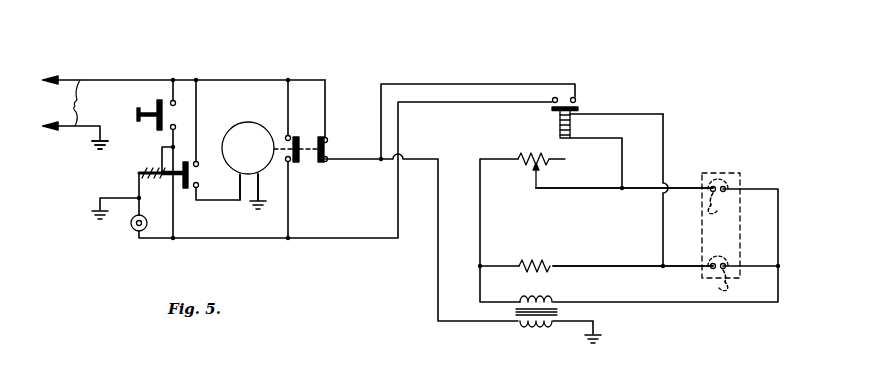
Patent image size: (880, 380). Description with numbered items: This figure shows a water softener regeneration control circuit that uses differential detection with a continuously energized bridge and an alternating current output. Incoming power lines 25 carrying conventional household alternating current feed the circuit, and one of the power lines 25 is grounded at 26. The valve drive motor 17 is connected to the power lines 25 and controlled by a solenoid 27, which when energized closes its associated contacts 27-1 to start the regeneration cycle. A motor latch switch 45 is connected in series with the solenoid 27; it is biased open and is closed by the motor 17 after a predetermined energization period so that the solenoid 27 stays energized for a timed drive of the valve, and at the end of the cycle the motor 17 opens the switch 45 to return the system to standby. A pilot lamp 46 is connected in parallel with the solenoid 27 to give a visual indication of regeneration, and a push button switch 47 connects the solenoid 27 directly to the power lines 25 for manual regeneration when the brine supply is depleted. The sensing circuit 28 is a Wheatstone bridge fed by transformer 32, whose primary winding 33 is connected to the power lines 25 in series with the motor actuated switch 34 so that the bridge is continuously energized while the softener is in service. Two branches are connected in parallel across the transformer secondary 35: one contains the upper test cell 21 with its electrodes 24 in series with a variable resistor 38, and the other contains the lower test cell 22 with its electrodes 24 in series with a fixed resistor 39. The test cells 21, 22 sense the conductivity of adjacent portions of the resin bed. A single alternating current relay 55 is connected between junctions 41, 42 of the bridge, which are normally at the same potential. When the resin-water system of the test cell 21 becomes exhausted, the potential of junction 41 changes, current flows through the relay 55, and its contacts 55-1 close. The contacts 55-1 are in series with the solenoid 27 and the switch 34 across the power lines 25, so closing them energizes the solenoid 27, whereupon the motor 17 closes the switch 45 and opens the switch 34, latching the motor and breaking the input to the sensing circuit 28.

The power lines 25 is at (89, 103).
The ground 26 is at (90, 148).
The push button switch 47 is at (160, 100).
The solenoid 27 is at (146, 158).
The contacts 27-1 is at (198, 180).
The valve drive motor 17 is at (248, 122).
The motor latch switch 45 is at (297, 163).
The motor actuated switch 34 is at (327, 142).
The pilot lamp 46 is at (134, 232).
The sensing circuit 28 is at (500, 154).
The variable resistor 38 is at (522, 167).
The fixed resistor 39 is at (532, 263).
The junction 41 is at (620, 190).
The junction 42 is at (660, 265).
The contacts 55-1 is at (575, 97).
The alternating current relay 55 is at (577, 126).
The test cell 21 is at (744, 178).
The test cell 22 is at (742, 282).
The electrodes 24 is at (706, 291).
The transformer secondary 35 is at (543, 297).
The transformer 32 is at (558, 311).
The primary winding 33 is at (532, 328).